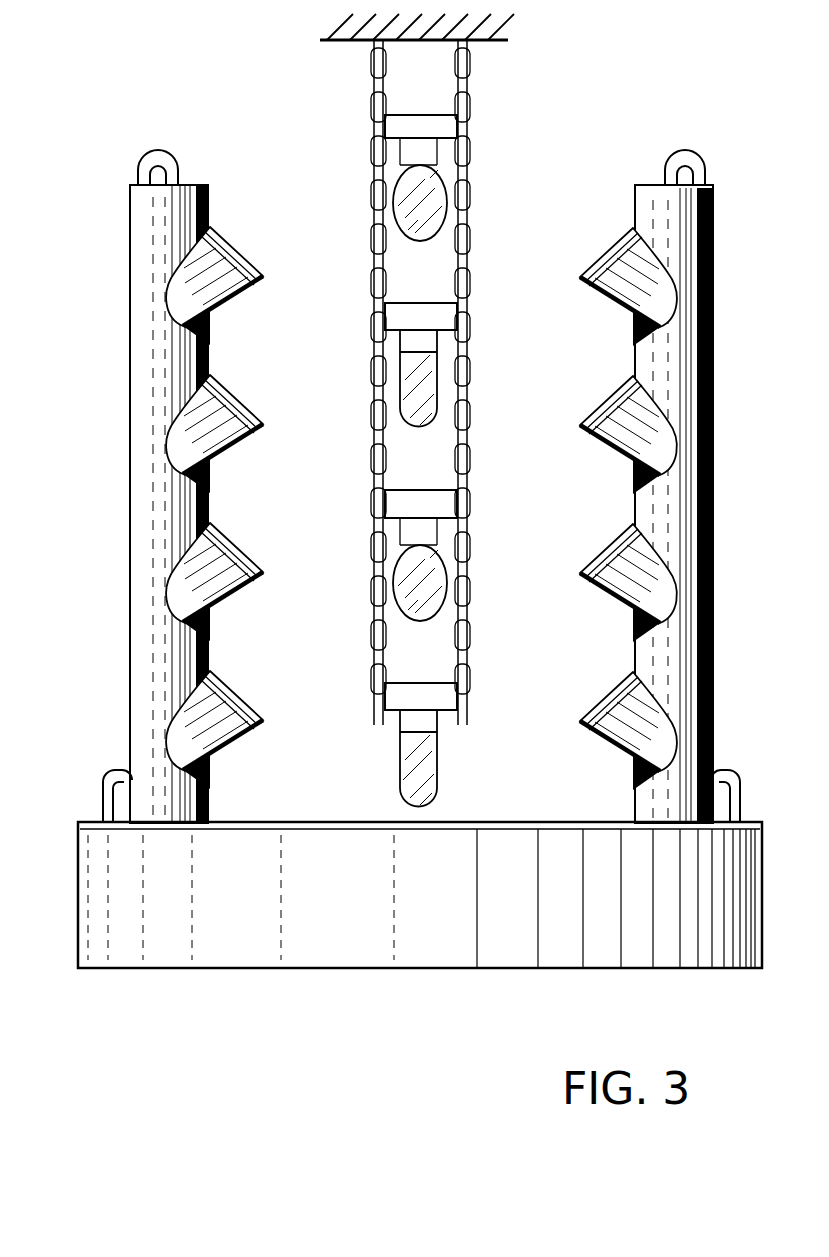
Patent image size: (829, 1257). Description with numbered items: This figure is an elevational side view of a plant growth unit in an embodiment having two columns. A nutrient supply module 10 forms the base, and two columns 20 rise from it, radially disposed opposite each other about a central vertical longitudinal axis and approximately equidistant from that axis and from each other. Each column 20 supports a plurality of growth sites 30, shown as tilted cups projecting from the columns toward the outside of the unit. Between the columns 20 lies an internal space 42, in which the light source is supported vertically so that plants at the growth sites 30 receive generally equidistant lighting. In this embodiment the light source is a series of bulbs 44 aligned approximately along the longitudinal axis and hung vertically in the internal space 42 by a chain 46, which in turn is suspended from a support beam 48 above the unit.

The nutrient supply module 10 is at (236, 972).
The columns 20 is at (135, 450).
The growth sites 30 is at (240, 303).
The internal space 42 is at (459, 423).
The bulbs 44 is at (440, 398).
The chain 46 is at (476, 264).
The support beam 48 is at (340, 52).